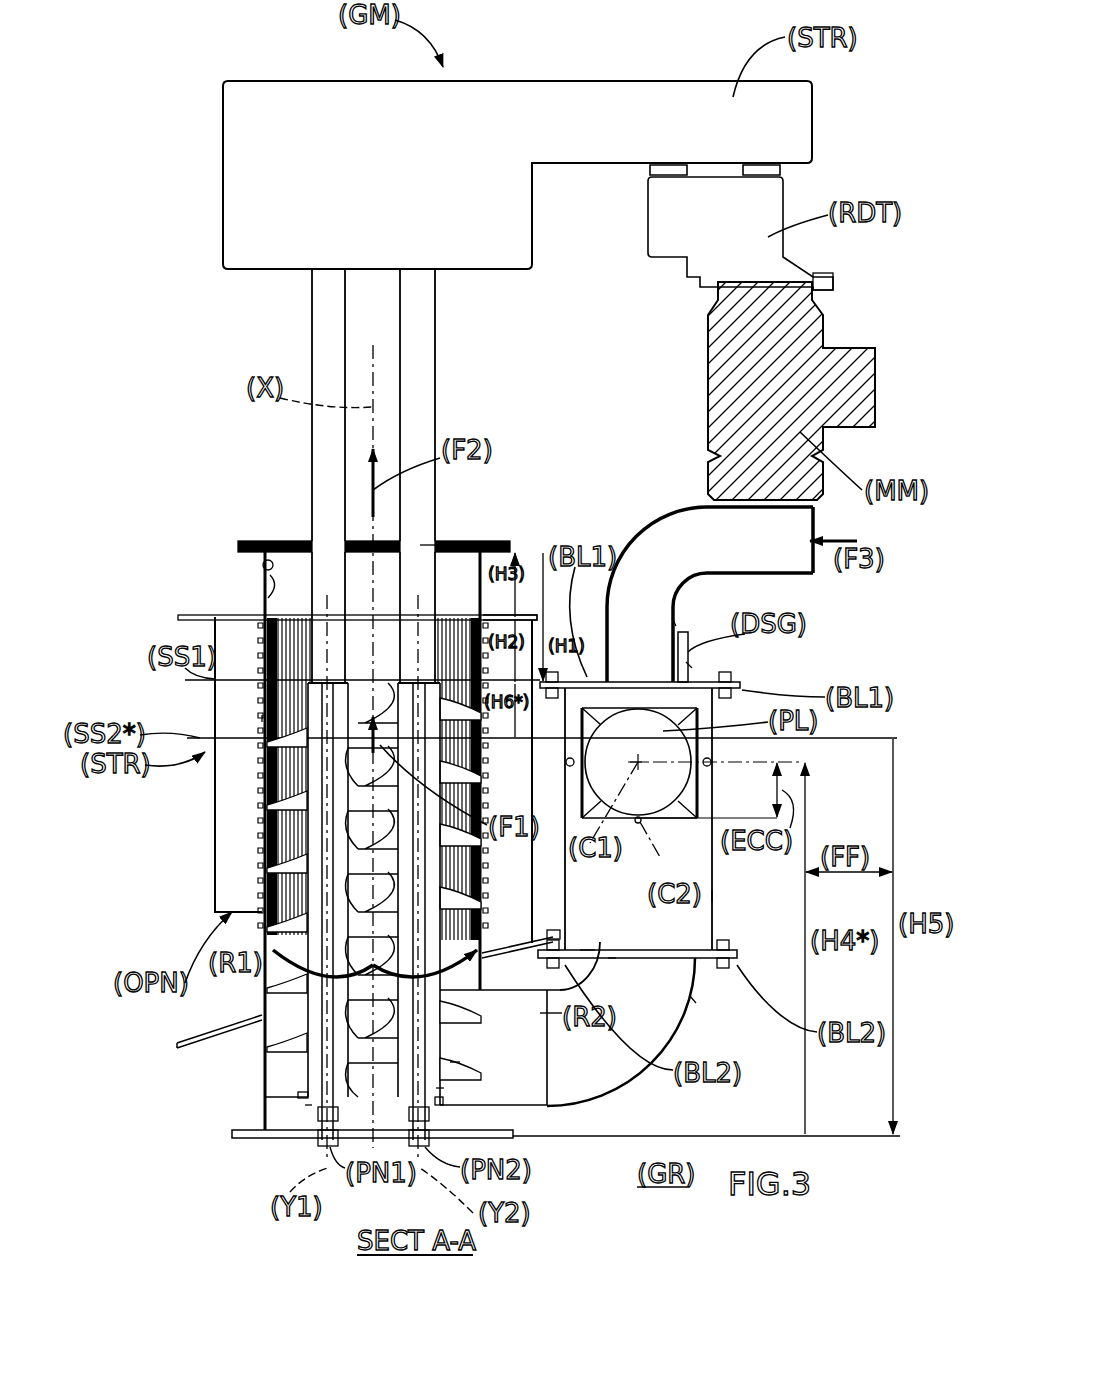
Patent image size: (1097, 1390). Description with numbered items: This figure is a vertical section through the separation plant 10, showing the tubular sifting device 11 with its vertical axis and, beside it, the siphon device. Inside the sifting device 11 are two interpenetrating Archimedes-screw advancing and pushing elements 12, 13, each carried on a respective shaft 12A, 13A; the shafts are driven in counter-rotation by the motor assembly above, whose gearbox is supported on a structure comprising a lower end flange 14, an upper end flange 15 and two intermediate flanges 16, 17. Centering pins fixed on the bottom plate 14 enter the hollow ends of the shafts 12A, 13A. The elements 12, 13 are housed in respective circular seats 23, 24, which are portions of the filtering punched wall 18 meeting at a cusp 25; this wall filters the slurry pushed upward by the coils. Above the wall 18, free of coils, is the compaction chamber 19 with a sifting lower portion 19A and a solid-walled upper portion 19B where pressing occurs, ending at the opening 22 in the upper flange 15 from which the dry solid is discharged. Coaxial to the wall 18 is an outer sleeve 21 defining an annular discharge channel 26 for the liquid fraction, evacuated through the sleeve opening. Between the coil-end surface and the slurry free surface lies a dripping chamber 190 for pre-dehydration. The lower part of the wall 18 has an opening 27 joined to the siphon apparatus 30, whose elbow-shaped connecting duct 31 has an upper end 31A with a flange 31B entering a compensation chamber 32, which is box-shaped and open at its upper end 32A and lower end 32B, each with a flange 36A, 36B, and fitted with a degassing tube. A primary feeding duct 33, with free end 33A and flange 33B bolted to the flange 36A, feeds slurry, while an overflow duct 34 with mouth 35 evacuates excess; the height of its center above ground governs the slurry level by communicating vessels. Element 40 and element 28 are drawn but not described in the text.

The separation plant 10 is at (185, 503).
The tubular sifting device 11 is at (262, 635).
The advancing and pushing element 12 is at (267, 1073).
The shaft 12A is at (310, 1110).
The advancing and pushing element 13 is at (485, 1060).
The shaft 13A is at (455, 1065).
The lower end flange 14 is at (248, 1140).
The upper end flange 15 is at (500, 548).
The intermediate flange 16 is at (242, 1025).
The intermediate flange 17 is at (200, 615).
The filtering punched wall 18 is at (262, 880).
The compaction chamber 19 is at (262, 565).
The lower portion 19A is at (262, 660).
The upper portion 19B is at (250, 550).
The dripping chamber 190 is at (262, 705).
The outer sleeve 21 is at (215, 725).
The opening 22 is at (425, 548).
The seat 23 is at (290, 595).
The seat 24 is at (437, 560).
The cusp 25 is at (385, 640).
The annular discharge channel 26 is at (262, 887).
The opening 27 is at (440, 1092).
The pin support 28 is at (263, 1078).
The siphon apparatus 30 is at (716, 896).
The connecting duct 31 is at (695, 975).
The upper end 31A is at (693, 1000).
The flange 31B is at (612, 960).
The compensation chamber 32 is at (686, 849).
The upper end 32A is at (603, 690).
The lower end 32B is at (587, 950).
The primary feeding duct 33 is at (773, 575).
The free end 33A is at (675, 622).
The flange 33B is at (690, 665).
The overflow duct 34 is at (707, 782).
The mouth 35 is at (660, 722).
The flange 36A is at (742, 684).
The flange 36B is at (737, 955).
The shaft axis assembly 40 is at (296, 538).